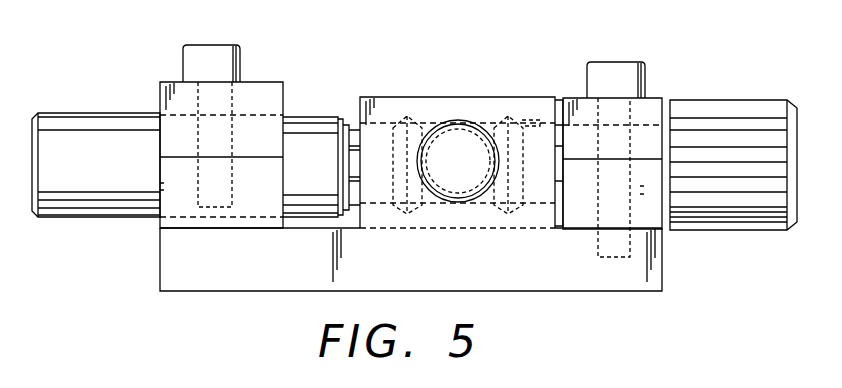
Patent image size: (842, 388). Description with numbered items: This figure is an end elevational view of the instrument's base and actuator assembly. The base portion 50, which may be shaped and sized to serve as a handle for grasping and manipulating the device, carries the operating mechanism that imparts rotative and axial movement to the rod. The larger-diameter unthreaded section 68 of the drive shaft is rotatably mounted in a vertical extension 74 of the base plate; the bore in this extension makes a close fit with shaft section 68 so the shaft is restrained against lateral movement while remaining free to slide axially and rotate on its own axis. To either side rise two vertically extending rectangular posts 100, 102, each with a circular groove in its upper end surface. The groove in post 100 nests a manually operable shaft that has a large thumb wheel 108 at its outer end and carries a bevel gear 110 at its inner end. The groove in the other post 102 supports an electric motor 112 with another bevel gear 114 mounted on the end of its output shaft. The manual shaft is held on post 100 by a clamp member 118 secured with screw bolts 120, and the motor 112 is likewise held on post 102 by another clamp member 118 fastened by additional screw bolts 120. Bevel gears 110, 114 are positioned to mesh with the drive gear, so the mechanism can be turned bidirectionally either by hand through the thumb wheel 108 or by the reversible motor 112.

The base portion 50 is at (208, 292).
The unthreaded section of drive shaft 68 is at (463, 121).
The vertical extension of base plate 74 is at (388, 97).
The post 100 is at (662, 192).
The post 102 is at (158, 185).
The thumb wheel 108 is at (732, 99).
The bevel gear 110 is at (530, 123).
The electric motor 112 is at (63, 218).
The bevel gear 114 is at (352, 117).
The clamp member 118 is at (173, 81).
The screw bolts 120 is at (216, 44).